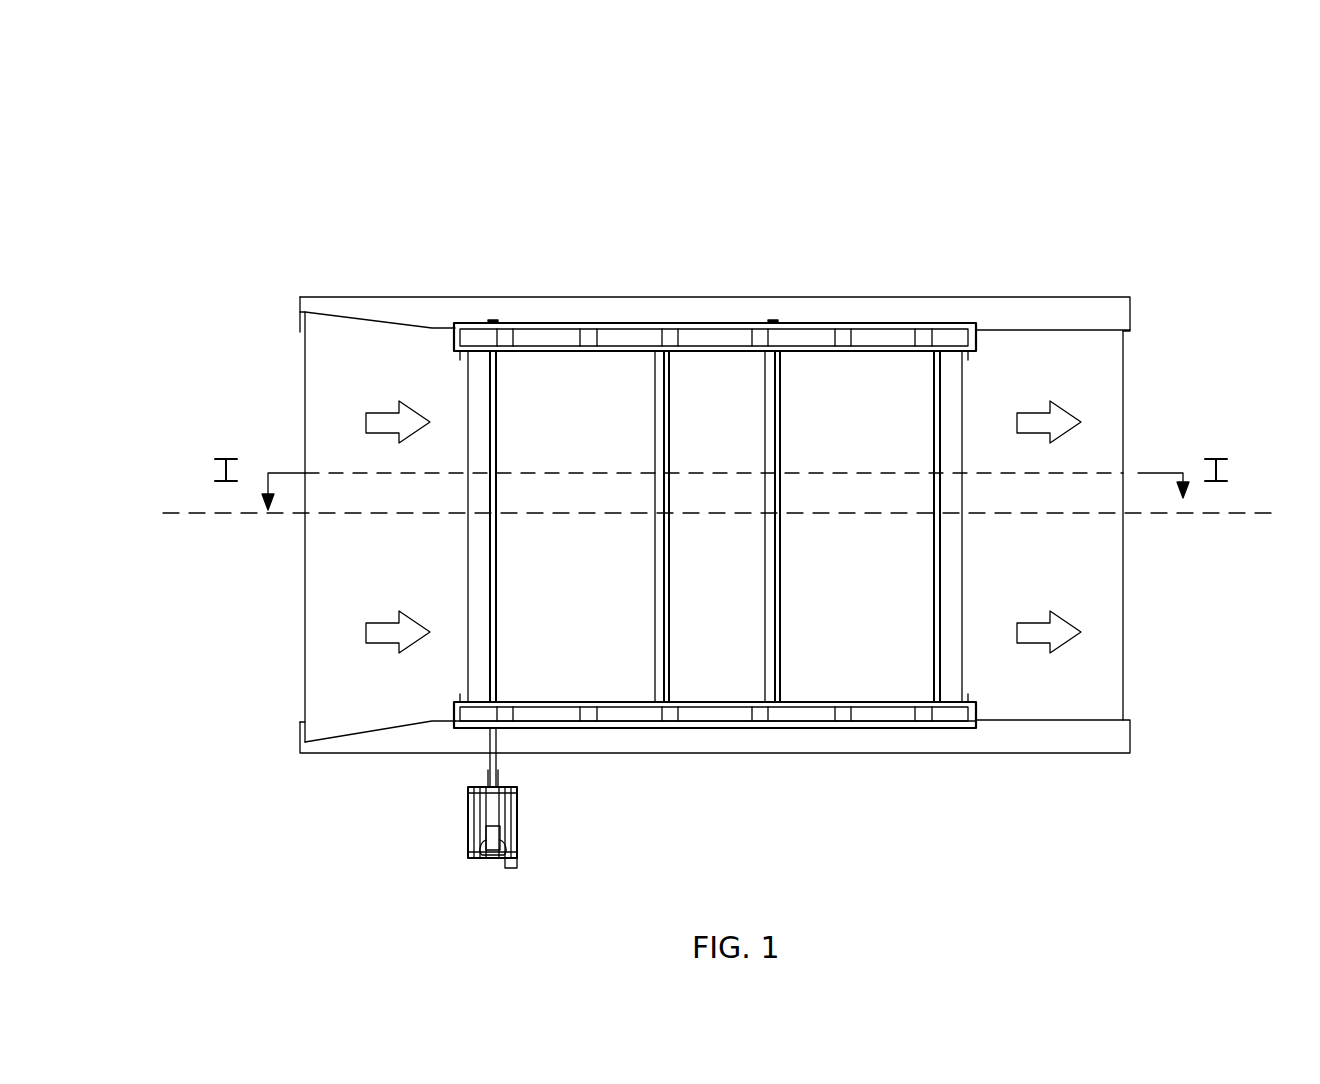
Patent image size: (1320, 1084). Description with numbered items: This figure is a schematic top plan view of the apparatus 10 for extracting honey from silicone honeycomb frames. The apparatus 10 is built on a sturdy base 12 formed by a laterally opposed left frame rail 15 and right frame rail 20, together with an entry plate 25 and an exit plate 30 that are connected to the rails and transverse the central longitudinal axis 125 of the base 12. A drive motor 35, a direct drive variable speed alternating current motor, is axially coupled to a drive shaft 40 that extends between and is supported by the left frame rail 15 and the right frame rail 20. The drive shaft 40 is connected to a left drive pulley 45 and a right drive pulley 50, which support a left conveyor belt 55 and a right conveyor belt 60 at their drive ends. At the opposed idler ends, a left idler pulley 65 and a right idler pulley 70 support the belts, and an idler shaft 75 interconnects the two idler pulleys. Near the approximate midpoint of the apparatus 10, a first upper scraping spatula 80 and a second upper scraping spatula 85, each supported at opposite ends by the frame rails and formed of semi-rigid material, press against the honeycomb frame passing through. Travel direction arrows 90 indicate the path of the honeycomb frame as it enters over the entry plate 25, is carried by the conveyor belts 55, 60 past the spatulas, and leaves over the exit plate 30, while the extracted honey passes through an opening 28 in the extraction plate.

The apparatus 10 is at (322, 208).
The base 12 is at (1080, 268).
The left frame rail 15 is at (543, 296).
The right frame rail 20 is at (862, 735).
The entry plate 25 is at (340, 520).
The opening 28 is at (818, 626).
The exit plate 30 is at (1068, 548).
The drive motor 35 is at (498, 808).
The drive shaft 40 is at (493, 540).
The left drive pulley 45 is at (485, 326).
The right drive pulley 50 is at (470, 726).
The left conveyor belt 55 is at (615, 331).
The right conveyor belt 60 is at (632, 712).
The left idler pulley 65 is at (958, 330).
The right idler pulley 70 is at (940, 722).
The idler shaft 75 is at (940, 488).
The first upper scraping spatula 80 is at (665, 393).
The second upper scraping spatula 85 is at (775, 415).
The travel direction arrows 90 is at (378, 408).
The central longitudinal axis 125 is at (178, 503).